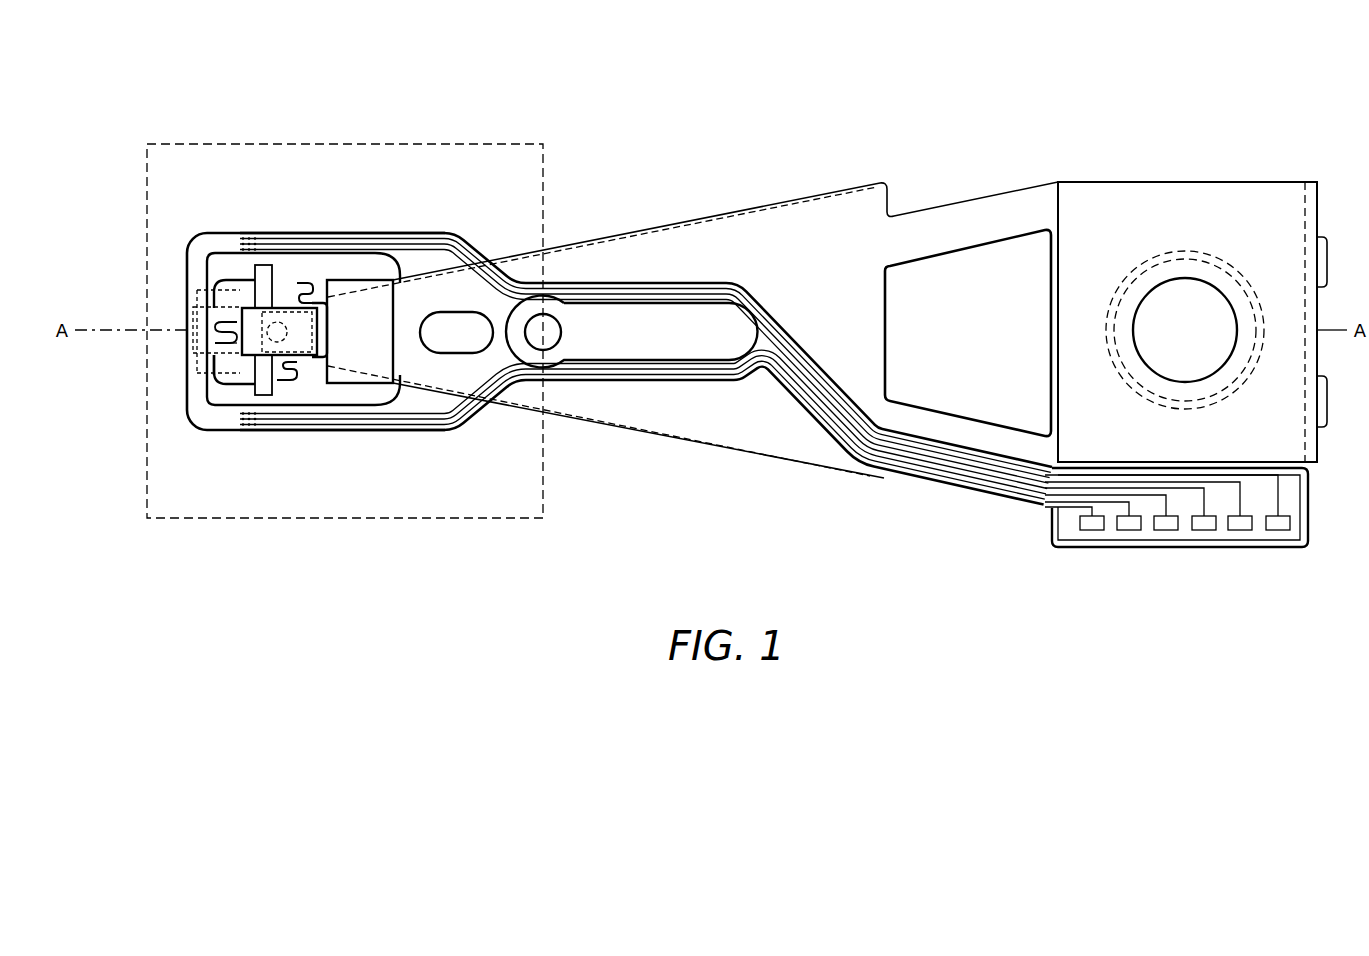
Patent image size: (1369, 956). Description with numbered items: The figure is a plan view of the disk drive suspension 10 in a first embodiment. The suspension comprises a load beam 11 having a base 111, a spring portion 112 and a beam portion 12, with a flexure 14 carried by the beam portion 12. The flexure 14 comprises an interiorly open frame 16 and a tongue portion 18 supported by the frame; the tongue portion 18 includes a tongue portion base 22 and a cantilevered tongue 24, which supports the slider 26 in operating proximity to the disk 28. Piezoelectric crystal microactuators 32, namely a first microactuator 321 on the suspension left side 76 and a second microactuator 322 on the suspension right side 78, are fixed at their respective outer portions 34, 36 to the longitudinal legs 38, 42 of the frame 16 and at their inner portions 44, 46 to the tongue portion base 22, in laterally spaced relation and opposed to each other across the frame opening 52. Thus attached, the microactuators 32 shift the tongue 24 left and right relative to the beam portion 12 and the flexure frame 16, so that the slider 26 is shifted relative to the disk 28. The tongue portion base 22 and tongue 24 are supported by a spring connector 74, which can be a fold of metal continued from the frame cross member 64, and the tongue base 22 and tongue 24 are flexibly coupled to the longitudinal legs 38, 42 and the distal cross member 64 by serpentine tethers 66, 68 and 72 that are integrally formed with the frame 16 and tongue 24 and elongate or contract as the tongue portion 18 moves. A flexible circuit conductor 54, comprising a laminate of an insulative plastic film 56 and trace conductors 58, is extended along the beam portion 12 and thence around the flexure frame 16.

The disk drive suspension 10 is at (1304, 157).
The load beam 11 is at (727, 213).
The beam portion 12 is at (672, 247).
The flexure 14 is at (505, 330).
The frame 16 is at (372, 235).
The tongue portion 18 is at (270, 292).
The tongue portion base 22 is at (212, 385).
The tongue 24 is at (345, 290).
The slider 26 is at (305, 327).
The disk 28 is at (195, 152).
The piezoelectric crystal microactuator 32 is at (240, 285).
The outer portion 34 is at (258, 268).
The outer portion 36 is at (262, 397).
The longitudinal leg 38 is at (372, 400).
The longitudinal leg 42 is at (392, 268).
The inner portion 44 is at (235, 320).
The inner portion 46 is at (230, 342).
The frame opening 52 is at (340, 288).
The flexible circuit conductor 54 is at (813, 413).
The insulative plastic film 56 is at (767, 335).
The trace conductors 58 is at (718, 283).
The frame cross member 64 is at (187, 420).
The tether 66 is at (342, 388).
The tether 68 is at (303, 285).
The tether 72 is at (215, 337).
The spring connector 74 is at (225, 338).
The left side 76 is at (608, 240).
The right side 78 is at (673, 424).
The base 111 is at (1327, 358).
The spring portion 112 is at (932, 234).
The first microactuator 321 is at (240, 307).
The second piezoelectric crystal microactuator 322 is at (230, 360).